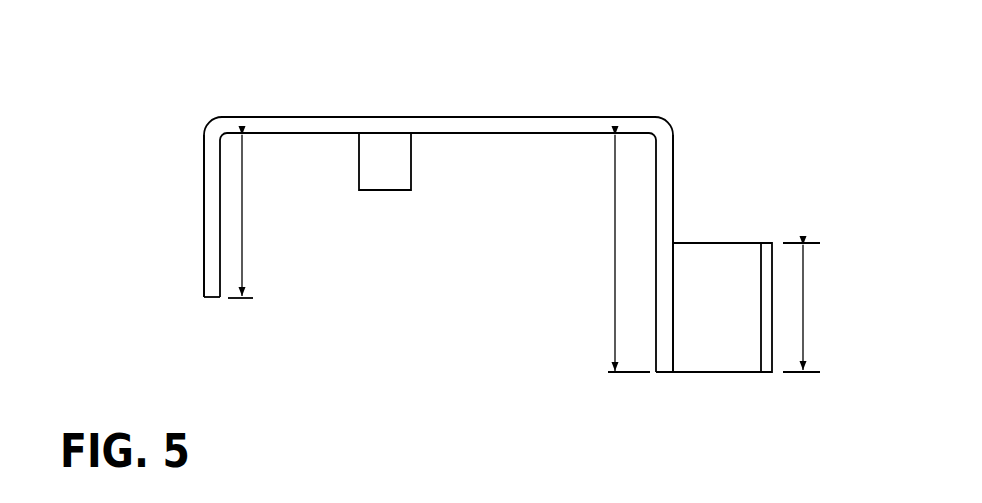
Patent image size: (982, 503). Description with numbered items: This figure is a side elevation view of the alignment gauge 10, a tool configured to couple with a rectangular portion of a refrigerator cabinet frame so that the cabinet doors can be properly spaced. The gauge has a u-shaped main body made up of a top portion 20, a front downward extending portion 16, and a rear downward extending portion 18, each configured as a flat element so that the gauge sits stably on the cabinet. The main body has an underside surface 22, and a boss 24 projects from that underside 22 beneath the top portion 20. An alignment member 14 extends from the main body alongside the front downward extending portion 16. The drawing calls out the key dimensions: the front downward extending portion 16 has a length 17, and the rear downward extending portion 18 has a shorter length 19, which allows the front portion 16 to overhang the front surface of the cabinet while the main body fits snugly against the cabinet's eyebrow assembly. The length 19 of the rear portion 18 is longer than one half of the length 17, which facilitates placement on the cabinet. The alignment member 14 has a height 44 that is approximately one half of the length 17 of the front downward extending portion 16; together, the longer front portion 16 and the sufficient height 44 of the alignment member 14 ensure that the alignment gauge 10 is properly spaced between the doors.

The alignment gauge 10 is at (685, 96).
The alignment member 14 is at (725, 262).
The front downward extending portion 16 is at (673, 159).
The length of front downward extending portion 17 is at (615, 243).
The rear downward extending portion 18 is at (203, 229).
The length of rear downward extending portion 19 is at (243, 193).
The top portion 20 is at (502, 126).
The underside surface 22 is at (291, 272).
The boss 24 is at (395, 168).
The height of alignment member 44 is at (803, 292).